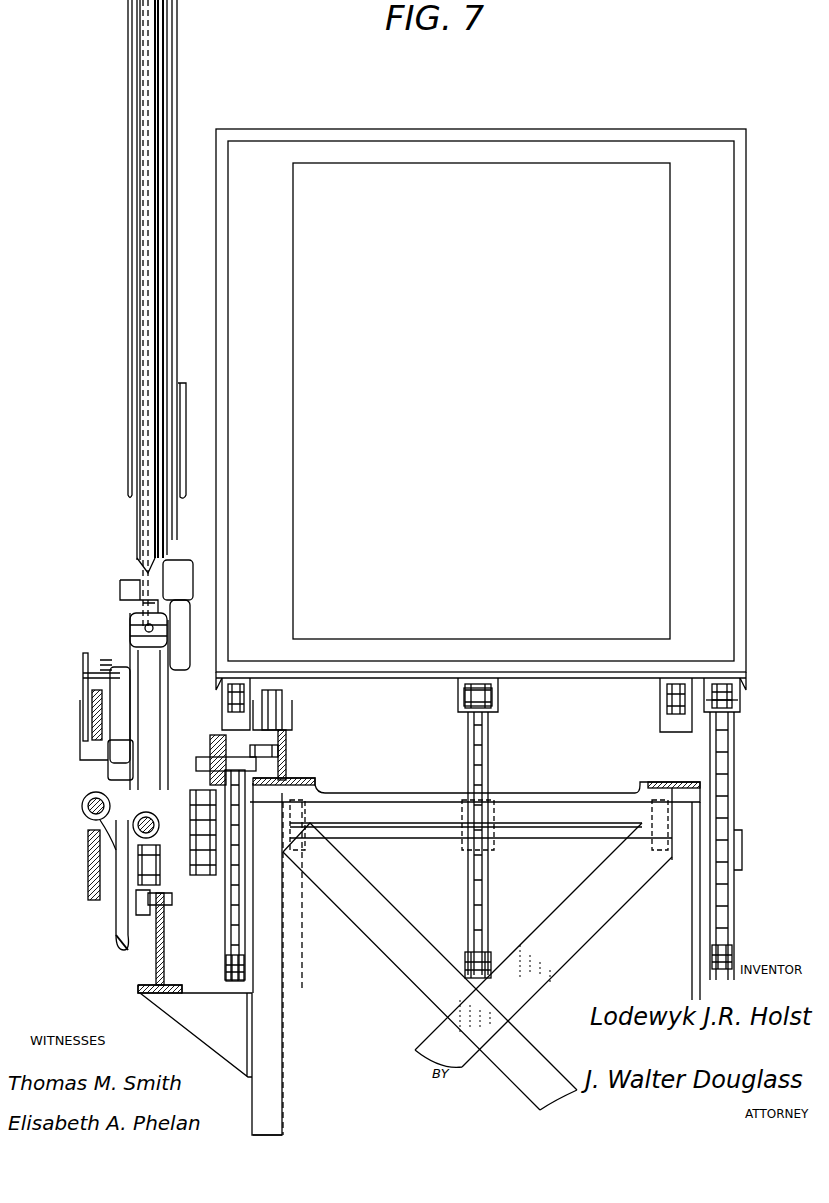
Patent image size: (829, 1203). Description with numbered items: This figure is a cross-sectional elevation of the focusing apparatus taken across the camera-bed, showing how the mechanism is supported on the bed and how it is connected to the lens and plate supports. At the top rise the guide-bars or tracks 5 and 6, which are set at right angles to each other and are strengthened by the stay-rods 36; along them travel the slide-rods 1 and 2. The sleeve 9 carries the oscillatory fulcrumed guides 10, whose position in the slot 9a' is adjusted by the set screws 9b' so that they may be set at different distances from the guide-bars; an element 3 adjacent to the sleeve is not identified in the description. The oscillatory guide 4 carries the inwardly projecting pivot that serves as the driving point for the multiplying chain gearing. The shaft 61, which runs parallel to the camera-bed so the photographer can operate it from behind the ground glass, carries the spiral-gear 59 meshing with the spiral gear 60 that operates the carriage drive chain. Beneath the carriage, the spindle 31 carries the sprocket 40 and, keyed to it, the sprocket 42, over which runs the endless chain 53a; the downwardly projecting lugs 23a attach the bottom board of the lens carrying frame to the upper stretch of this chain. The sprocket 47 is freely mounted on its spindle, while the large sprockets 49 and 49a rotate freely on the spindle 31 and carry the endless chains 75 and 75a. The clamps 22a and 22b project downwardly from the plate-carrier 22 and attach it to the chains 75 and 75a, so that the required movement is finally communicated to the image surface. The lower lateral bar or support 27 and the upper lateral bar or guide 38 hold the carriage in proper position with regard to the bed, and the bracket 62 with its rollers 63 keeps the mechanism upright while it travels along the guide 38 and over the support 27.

The slide-rod 1 is at (118, 942).
The slide-rod 2 is at (178, 512).
The sleeve block 3 is at (178, 615).
The oscillatory guide 4 is at (118, 775).
The guide-bar 5 is at (138, 830).
The guide-bar 6 is at (145, 510).
The sleeve 9 is at (145, 628).
The slot 9a' is at (92, 697).
The set screws 9b' is at (205, 613).
The oscillatory fulcrumed guides 10 is at (115, 670).
The plate-support 22 is at (481, 400).
The clamp 22a is at (265, 710).
The clamp 22b is at (740, 712).
The downwardly projecting lugs 23a is at (495, 698).
The lower lateral bar 27 is at (155, 972).
The spindle 31 is at (545, 836).
The stay-rods 36 is at (128, 108).
The upper lateral bar 38 is at (245, 770).
The sprocket 40 is at (195, 845).
The sprocket 42 is at (470, 745).
The sprocket 47 is at (215, 868).
The sprocket 49 is at (235, 905).
The sprocket 49a is at (726, 888).
The endless chain 53a is at (465, 703).
The spiral-gear 59 is at (85, 815).
The spiral gear 60 is at (90, 886).
The shaft 61 is at (88, 803).
The bracket 62 is at (481, 658).
The rollers 63 is at (258, 740).
The endless chain 75 is at (240, 690).
The endless chain 75a is at (735, 700).